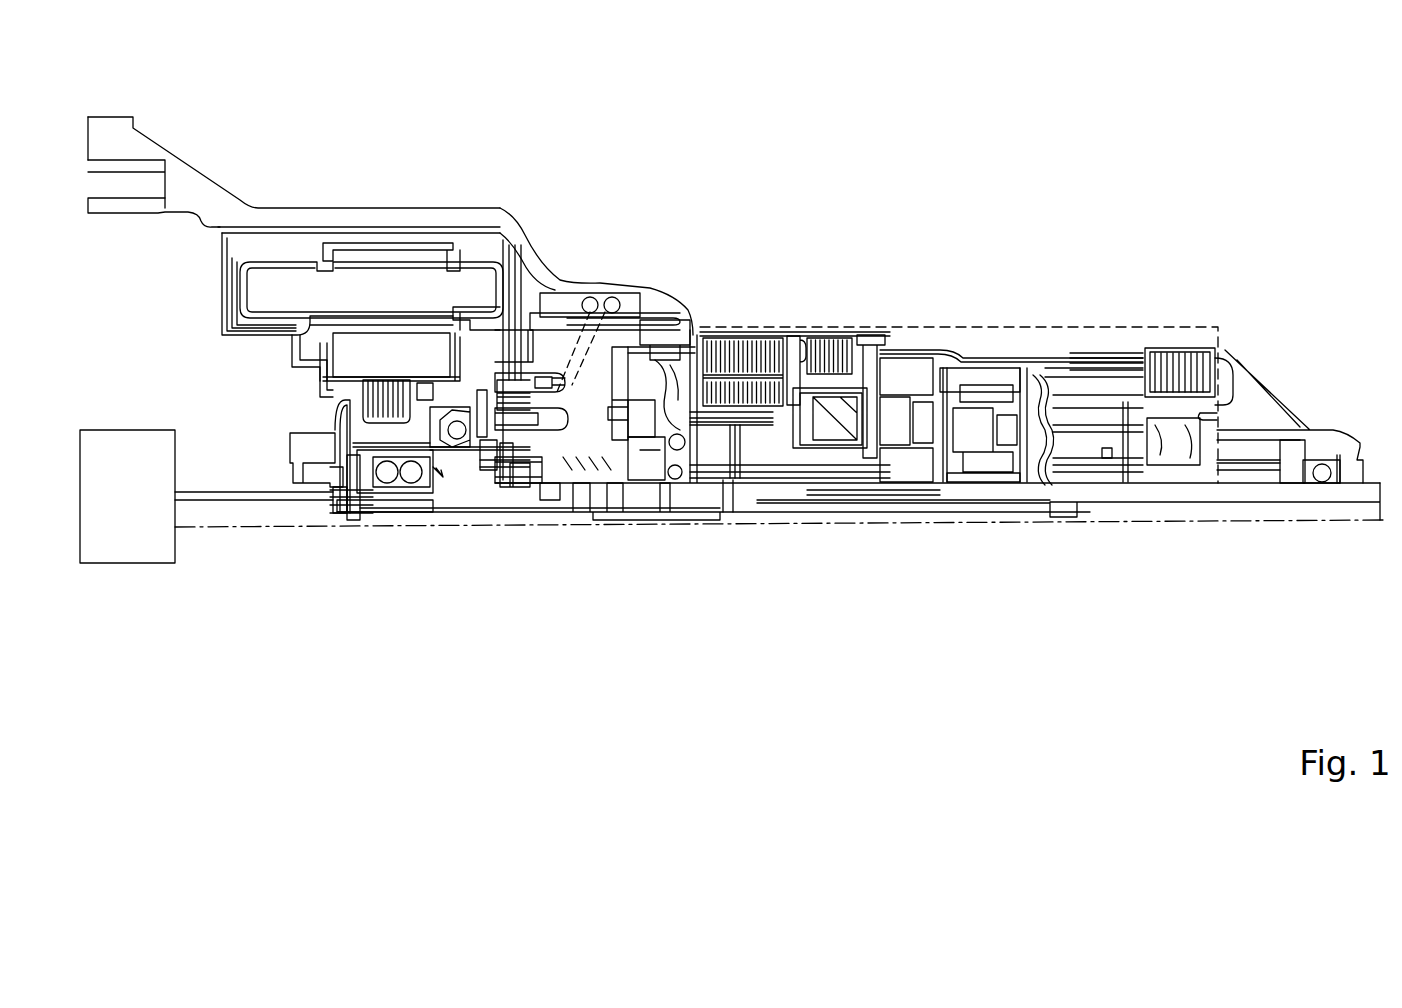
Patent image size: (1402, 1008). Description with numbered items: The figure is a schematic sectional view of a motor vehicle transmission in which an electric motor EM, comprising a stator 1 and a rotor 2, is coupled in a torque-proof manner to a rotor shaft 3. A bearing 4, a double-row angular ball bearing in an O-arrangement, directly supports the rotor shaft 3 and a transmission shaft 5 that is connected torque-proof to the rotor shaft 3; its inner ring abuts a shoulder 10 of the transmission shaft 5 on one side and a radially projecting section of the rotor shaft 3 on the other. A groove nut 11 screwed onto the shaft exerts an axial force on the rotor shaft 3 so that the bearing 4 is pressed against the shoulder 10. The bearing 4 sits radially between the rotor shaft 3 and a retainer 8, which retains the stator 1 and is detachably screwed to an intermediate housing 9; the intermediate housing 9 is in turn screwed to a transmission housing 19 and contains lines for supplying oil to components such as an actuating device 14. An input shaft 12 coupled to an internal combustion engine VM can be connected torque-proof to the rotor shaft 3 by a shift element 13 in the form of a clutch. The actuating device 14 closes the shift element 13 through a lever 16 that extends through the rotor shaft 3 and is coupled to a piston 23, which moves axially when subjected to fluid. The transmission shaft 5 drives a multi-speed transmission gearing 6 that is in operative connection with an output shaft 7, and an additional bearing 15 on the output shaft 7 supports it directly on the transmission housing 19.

The electric motor EM is at (282, 242).
The internal combustion engine VM is at (120, 553).
The stator 1 is at (378, 270).
The rotor 2 is at (373, 348).
The rotor shaft 3 is at (367, 528).
The bearing 4 is at (430, 463).
The transmission shaft 5 is at (567, 523).
The transmission gearing 6 is at (1080, 343).
The output shaft 7 is at (1193, 490).
The retainer 8 is at (528, 290).
The intermediate housing 9 is at (557, 303).
The shoulder 10 is at (405, 490).
The groove nut 11 is at (352, 528).
The input shaft 12 is at (237, 516).
The shift element 13 is at (350, 407).
The actuating device 14 is at (460, 275).
The additional bearing 15 is at (1320, 485).
The lever 16 is at (475, 447).
The transmission housing 19 is at (650, 298).
The piston 23 is at (552, 500).